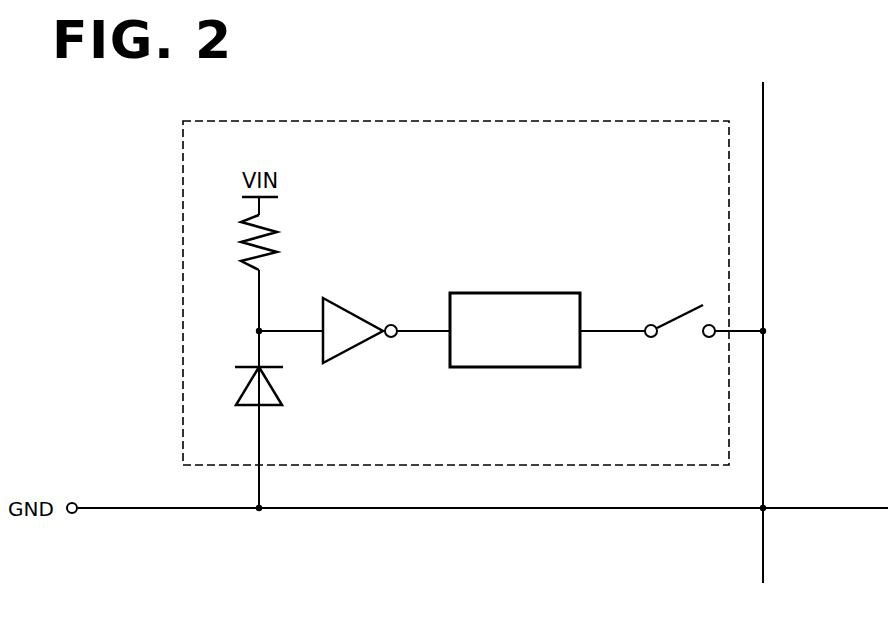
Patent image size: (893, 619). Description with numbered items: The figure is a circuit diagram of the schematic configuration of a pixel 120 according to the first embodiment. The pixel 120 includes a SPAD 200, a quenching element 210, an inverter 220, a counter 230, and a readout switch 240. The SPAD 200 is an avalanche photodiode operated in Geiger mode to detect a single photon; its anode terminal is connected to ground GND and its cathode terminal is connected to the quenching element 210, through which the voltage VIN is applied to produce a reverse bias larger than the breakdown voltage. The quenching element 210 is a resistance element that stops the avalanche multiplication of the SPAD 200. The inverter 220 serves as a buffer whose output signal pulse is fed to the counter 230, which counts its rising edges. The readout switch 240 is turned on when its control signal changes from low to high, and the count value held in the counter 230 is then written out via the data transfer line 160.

The pixel 120 is at (395, 119).
The data transfer line 160 is at (761, 97).
The SPAD 200 is at (285, 392).
The quenching element 210 is at (285, 236).
The inverter 220 is at (345, 308).
The counter 230 is at (532, 293).
The readout switch 240 is at (672, 313).